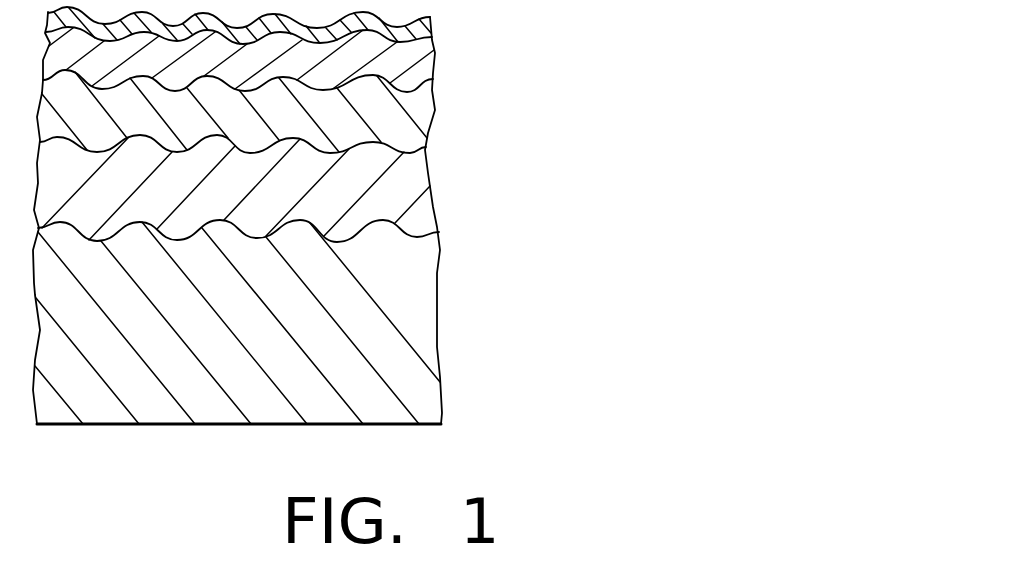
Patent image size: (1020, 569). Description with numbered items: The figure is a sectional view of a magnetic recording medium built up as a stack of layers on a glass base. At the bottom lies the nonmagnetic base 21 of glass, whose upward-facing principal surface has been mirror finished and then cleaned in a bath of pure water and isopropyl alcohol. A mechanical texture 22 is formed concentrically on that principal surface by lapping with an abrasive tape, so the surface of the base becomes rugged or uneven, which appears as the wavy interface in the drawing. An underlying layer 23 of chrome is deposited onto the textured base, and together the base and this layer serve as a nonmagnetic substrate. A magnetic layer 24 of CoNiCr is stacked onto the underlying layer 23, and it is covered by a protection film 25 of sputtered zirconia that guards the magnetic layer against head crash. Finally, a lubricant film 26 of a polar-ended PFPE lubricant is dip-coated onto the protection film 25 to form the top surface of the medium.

The nonmagnetic base 21 is at (417, 332).
The mechanical texture 22 is at (410, 232).
The underlying layer 23 is at (417, 192).
The magnetic layer 24 is at (423, 108).
The protection film 25 is at (420, 72).
The lubricant film 26 is at (422, 22).